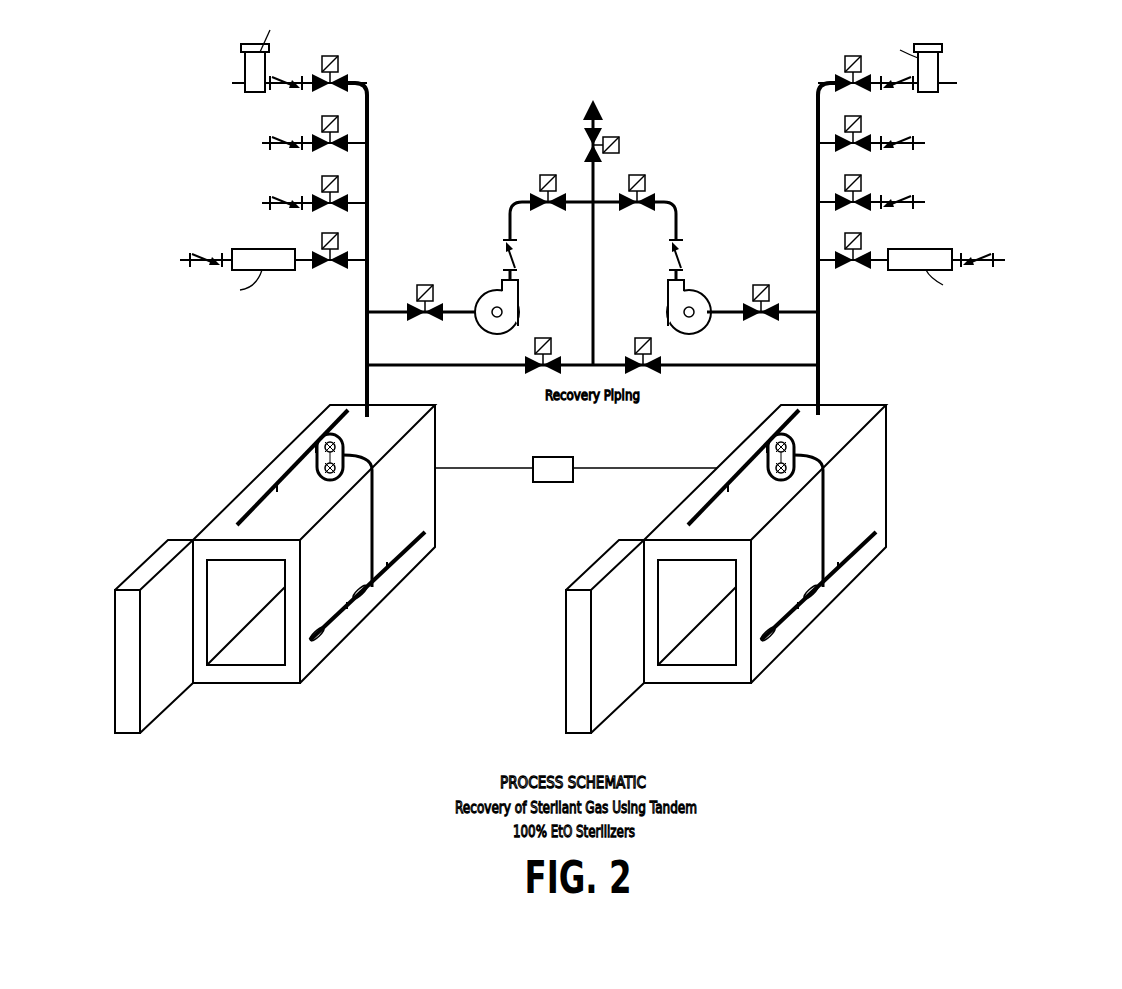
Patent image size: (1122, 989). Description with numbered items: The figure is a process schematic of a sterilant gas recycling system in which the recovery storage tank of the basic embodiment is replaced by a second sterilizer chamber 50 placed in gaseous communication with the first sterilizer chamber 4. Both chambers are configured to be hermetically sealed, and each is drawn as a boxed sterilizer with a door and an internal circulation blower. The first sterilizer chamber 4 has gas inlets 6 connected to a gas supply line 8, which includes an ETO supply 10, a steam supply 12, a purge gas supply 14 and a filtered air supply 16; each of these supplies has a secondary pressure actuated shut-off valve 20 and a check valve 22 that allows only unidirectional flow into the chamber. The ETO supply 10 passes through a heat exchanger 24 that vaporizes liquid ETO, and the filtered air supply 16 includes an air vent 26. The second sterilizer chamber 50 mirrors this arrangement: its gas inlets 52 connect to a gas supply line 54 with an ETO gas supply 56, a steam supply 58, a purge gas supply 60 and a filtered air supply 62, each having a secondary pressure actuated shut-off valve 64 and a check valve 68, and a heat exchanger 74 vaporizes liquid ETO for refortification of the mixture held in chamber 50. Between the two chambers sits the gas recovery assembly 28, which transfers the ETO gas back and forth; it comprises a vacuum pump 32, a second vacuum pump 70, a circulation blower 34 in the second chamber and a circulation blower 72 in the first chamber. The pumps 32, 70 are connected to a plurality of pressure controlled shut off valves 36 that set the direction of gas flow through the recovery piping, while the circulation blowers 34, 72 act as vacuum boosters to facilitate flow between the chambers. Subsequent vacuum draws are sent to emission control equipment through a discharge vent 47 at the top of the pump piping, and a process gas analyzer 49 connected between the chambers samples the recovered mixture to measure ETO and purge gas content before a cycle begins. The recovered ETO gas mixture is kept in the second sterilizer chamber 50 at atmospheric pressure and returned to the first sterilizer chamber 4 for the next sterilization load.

The sterilizer chamber 4 is at (875, 405).
The gas inlets 6 is at (823, 588).
The gas supply line 8 is at (822, 372).
The ETO supply 10 is at (1000, 250).
The steam supply 12 is at (927, 198).
The purge gas supply 14 is at (927, 139).
The filtered air supply 16 is at (957, 77).
The secondary pressure actuated shut-off valve 20 is at (862, 90).
The check valve 22 is at (905, 92).
The heat exchanger 24 is at (915, 270).
The air vent 26 is at (940, 58).
The gas recovery assembly 28 is at (700, 188).
The vacuum pump 32 is at (666, 306).
The circulation blower 34 is at (790, 472).
The pressure controlled shut off valves 36 is at (608, 134).
The discharge vent 47 is at (603, 106).
The process gas analyzer 49 is at (556, 456).
The second sterilizer chamber 50 is at (437, 458).
The gas inlets 52 is at (372, 588).
The gas supply line 54 is at (366, 358).
The ETO gas supply 56 is at (181, 258).
The steam supply 58 is at (262, 201).
The purge gas supply 60 is at (262, 141).
The filtered air supply 62 is at (237, 72).
The secondary pressure actuated shut-off valve 64 is at (345, 78).
The check valve 68 is at (290, 76).
The second vacuum pump 70 is at (521, 309).
The circulation blower 72 is at (340, 470).
The heat exchanger 74 is at (272, 270).